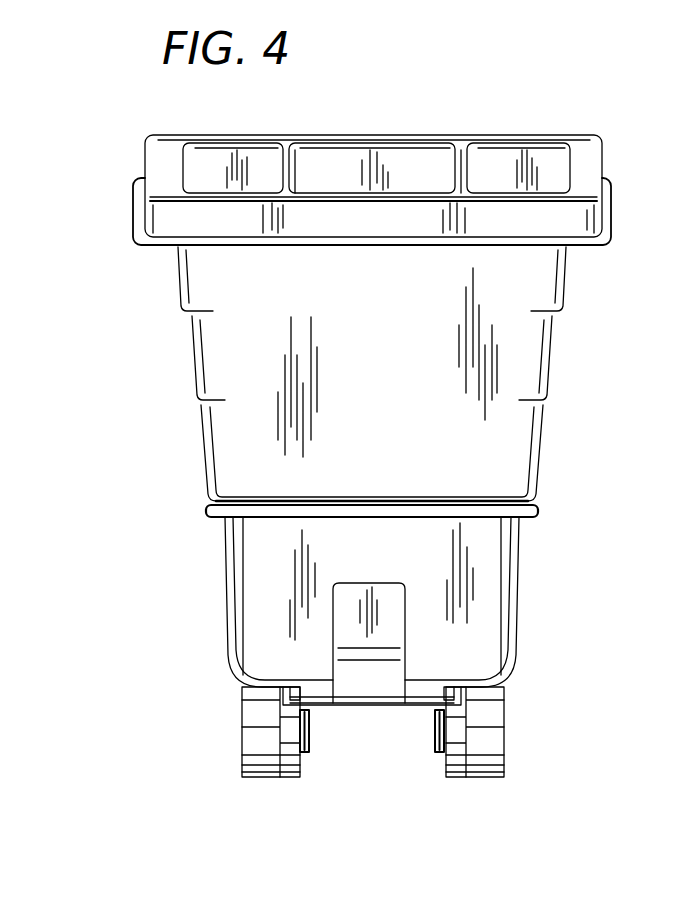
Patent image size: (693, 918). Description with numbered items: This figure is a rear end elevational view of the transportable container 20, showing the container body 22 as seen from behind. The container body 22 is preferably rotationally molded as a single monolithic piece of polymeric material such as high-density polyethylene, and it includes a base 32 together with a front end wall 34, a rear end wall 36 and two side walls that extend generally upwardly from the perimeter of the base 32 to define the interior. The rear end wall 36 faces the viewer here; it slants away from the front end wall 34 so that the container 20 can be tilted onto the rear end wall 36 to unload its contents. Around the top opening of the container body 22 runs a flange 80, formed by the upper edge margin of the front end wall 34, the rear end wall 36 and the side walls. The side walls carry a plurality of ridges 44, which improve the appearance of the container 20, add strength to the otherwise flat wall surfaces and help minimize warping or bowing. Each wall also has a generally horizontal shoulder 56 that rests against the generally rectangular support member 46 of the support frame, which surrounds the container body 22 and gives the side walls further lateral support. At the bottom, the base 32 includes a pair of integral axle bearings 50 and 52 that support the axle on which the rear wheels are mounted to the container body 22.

The transportable container 20 is at (540, 104).
The container body 22 is at (136, 147).
The flange 80 is at (603, 150).
The front end wall 34 is at (486, 165).
The rear end wall 36 is at (245, 338).
The ridges 44 is at (558, 318).
The horizontal shoulder 56 is at (212, 504).
The support member 46 is at (262, 514).
The base 32 is at (362, 684).
The axle bearing 50 is at (331, 710).
The axle bearing 52 is at (413, 710).